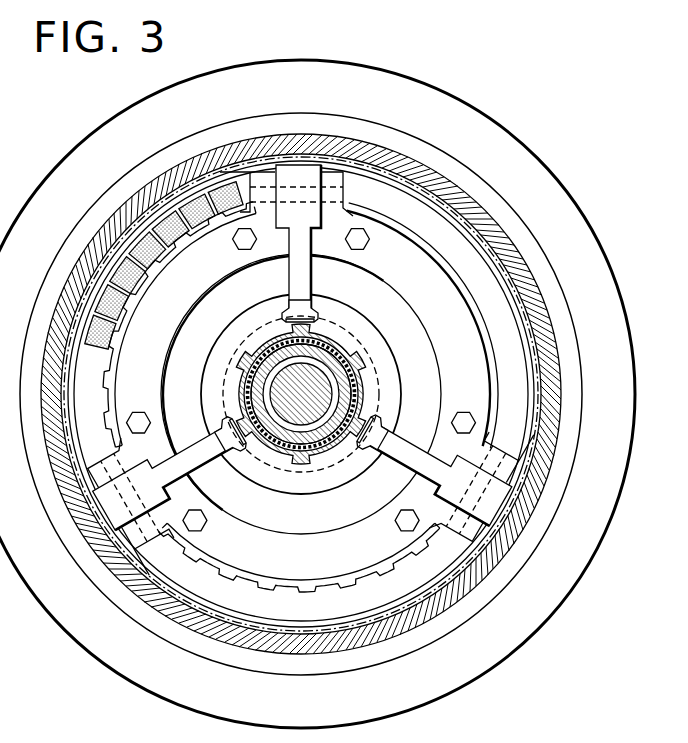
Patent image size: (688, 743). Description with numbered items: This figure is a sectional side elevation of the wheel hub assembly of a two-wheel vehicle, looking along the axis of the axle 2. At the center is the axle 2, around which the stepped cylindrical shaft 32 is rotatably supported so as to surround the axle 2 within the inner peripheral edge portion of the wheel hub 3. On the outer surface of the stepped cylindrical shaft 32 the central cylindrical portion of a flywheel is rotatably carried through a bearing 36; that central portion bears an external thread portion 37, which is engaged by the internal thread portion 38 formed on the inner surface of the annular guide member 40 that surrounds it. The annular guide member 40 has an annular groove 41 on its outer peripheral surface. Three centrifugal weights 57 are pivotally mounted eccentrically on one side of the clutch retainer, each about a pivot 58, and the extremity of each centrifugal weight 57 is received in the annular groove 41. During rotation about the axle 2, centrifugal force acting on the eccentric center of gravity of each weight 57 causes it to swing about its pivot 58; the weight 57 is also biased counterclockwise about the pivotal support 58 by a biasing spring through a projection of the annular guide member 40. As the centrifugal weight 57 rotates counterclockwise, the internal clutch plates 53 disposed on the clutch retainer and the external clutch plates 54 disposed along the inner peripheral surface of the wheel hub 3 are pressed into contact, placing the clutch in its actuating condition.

The axle 2 is at (327, 398).
The wheel hub 3 is at (230, 140).
The stepped cylindrical shaft 32 is at (257, 393).
The bearing 36 is at (263, 353).
The external thread portion 37 is at (361, 367).
The internal thread portion 38 is at (370, 358).
The annular guide member 40 is at (377, 323).
The annular groove 41 is at (284, 302).
The internal clutch plates 53 is at (122, 323).
The external clutch plates 54 is at (132, 277).
The centrifugal weights 57 is at (303, 276).
The pivot 58 is at (343, 195).